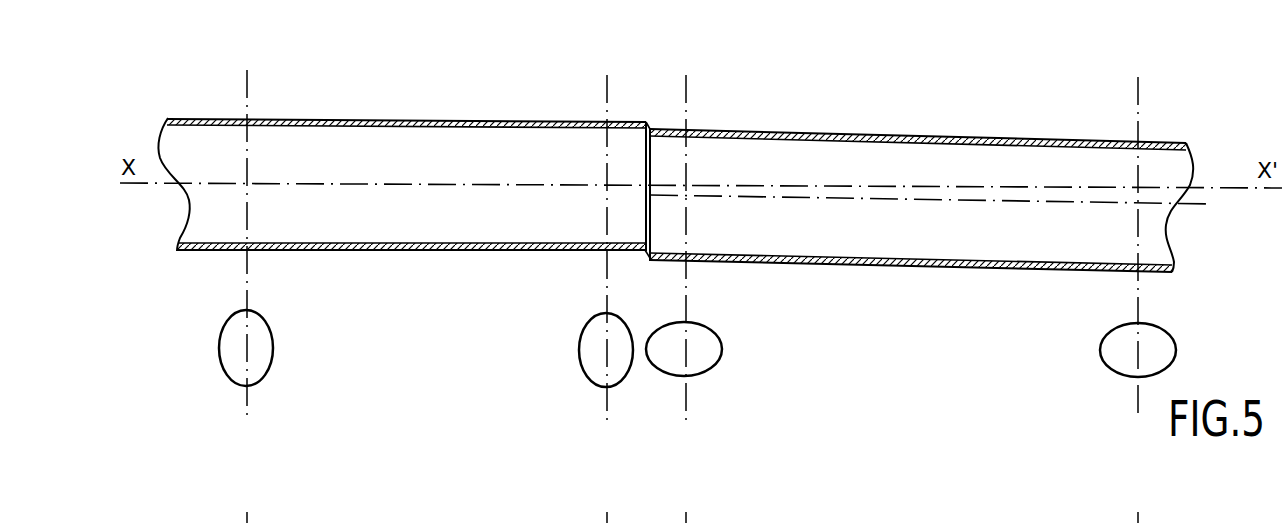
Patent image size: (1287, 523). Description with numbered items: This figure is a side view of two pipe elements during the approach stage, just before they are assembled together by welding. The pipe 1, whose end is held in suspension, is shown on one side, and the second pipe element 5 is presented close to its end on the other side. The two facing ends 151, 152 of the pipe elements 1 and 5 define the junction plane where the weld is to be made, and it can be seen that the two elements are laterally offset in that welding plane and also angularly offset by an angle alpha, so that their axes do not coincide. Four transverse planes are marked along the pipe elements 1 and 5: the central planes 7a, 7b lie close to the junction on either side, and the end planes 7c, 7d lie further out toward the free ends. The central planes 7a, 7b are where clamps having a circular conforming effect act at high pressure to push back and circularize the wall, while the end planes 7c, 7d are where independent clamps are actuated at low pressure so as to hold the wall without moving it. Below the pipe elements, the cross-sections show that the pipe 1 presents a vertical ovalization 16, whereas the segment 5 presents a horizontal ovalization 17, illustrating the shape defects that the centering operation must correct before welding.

The pipe 1 is at (411, 120).
The pipe element 5 is at (907, 135).
The end of pipe element 151 is at (647, 122).
The end of pipe element 152 is at (649, 257).
The central plane 7a is at (606, 91).
The central plane 7b is at (687, 89).
The end plane 7c is at (248, 83).
The end plane 7d is at (1137, 96).
The vertical ovalization 16 is at (591, 366).
The horizontal ovalization 17 is at (713, 357).